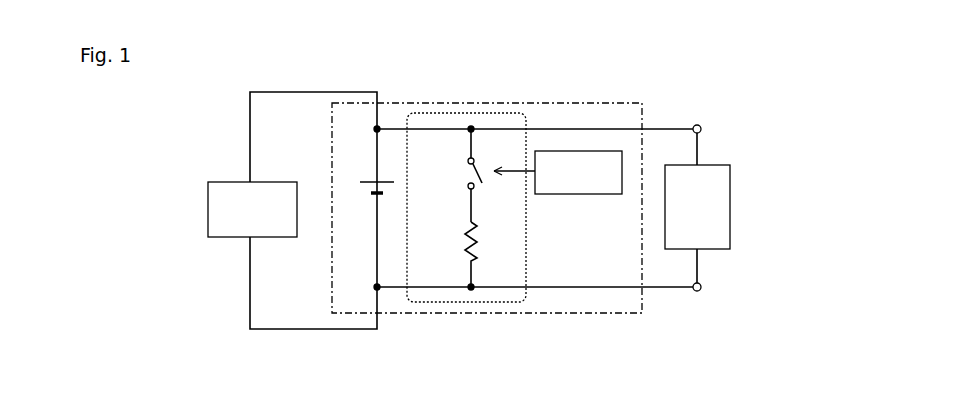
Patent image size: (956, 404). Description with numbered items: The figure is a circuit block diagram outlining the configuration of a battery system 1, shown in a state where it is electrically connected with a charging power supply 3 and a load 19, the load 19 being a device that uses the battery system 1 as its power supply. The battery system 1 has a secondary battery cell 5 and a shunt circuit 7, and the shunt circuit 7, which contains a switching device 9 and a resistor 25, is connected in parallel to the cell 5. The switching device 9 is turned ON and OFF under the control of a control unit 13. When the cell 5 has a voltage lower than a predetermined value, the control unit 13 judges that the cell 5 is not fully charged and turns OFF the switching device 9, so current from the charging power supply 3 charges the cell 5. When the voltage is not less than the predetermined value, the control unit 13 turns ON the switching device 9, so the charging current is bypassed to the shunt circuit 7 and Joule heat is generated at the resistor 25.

The battery system 1 is at (599, 319).
The charging power supply 3 is at (226, 238).
The secondary battery cell 5 is at (370, 202).
The shunt circuit 7 is at (478, 303).
The switching device 9 is at (465, 180).
The control unit 13 is at (573, 195).
The load 19 is at (731, 229).
The resistor 25 is at (482, 239).